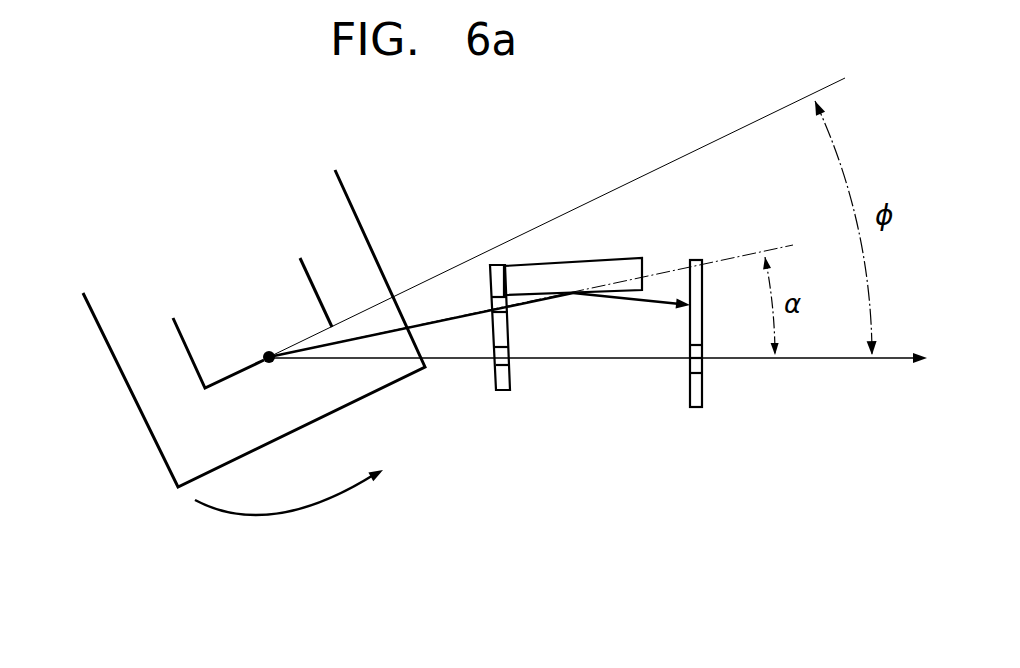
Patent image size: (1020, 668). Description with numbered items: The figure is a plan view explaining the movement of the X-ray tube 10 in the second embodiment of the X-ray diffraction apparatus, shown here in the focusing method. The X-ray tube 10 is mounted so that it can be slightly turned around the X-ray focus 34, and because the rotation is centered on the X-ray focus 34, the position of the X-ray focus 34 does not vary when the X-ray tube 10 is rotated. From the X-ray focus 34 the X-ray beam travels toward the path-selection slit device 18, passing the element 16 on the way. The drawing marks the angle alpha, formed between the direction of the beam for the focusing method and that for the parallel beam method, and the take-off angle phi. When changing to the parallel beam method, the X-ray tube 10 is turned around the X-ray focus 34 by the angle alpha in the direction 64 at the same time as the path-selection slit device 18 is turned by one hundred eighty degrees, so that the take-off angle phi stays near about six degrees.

The X-ray tube 10 is at (350, 200).
The X-ray focus 34 is at (271, 363).
The light source 16 is at (587, 257).
The path-selection slit device 18 is at (697, 260).
The direction 64 is at (293, 517).